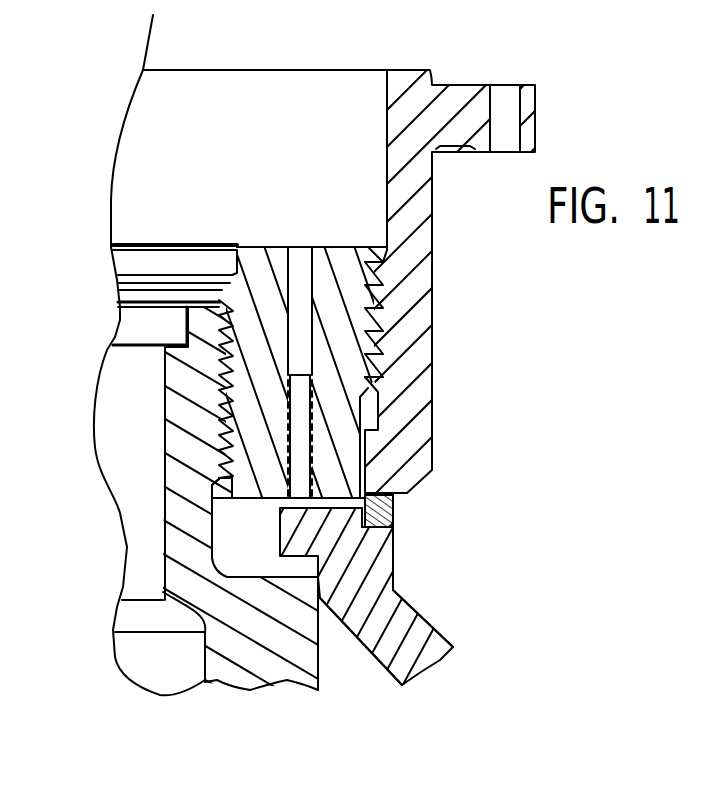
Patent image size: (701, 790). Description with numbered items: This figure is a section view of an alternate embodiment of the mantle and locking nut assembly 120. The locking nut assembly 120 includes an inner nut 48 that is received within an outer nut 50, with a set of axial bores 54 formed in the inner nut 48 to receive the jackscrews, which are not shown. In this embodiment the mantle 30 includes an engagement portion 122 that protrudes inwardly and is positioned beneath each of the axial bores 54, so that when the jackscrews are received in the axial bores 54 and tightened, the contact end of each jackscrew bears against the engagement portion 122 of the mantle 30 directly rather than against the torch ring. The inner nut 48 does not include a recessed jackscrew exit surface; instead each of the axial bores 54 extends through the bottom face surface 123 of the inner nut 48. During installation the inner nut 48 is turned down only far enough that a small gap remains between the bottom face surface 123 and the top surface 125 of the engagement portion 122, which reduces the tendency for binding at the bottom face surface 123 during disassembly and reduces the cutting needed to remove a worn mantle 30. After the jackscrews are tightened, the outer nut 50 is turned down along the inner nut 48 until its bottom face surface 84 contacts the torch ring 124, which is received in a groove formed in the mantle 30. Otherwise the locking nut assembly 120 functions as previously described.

The mantle 30 is at (400, 612).
The inner nut 48 is at (307, 324).
The outer nut 50 is at (450, 278).
The axial bores 54 is at (313, 257).
The bottom face surface 84 is at (397, 493).
The locking nut assembly 120 is at (505, 495).
The engagement portion 122 is at (310, 526).
The bottom face surface 123 is at (247, 500).
The torch ring 124 is at (383, 510).
The top surface 125 is at (345, 513).